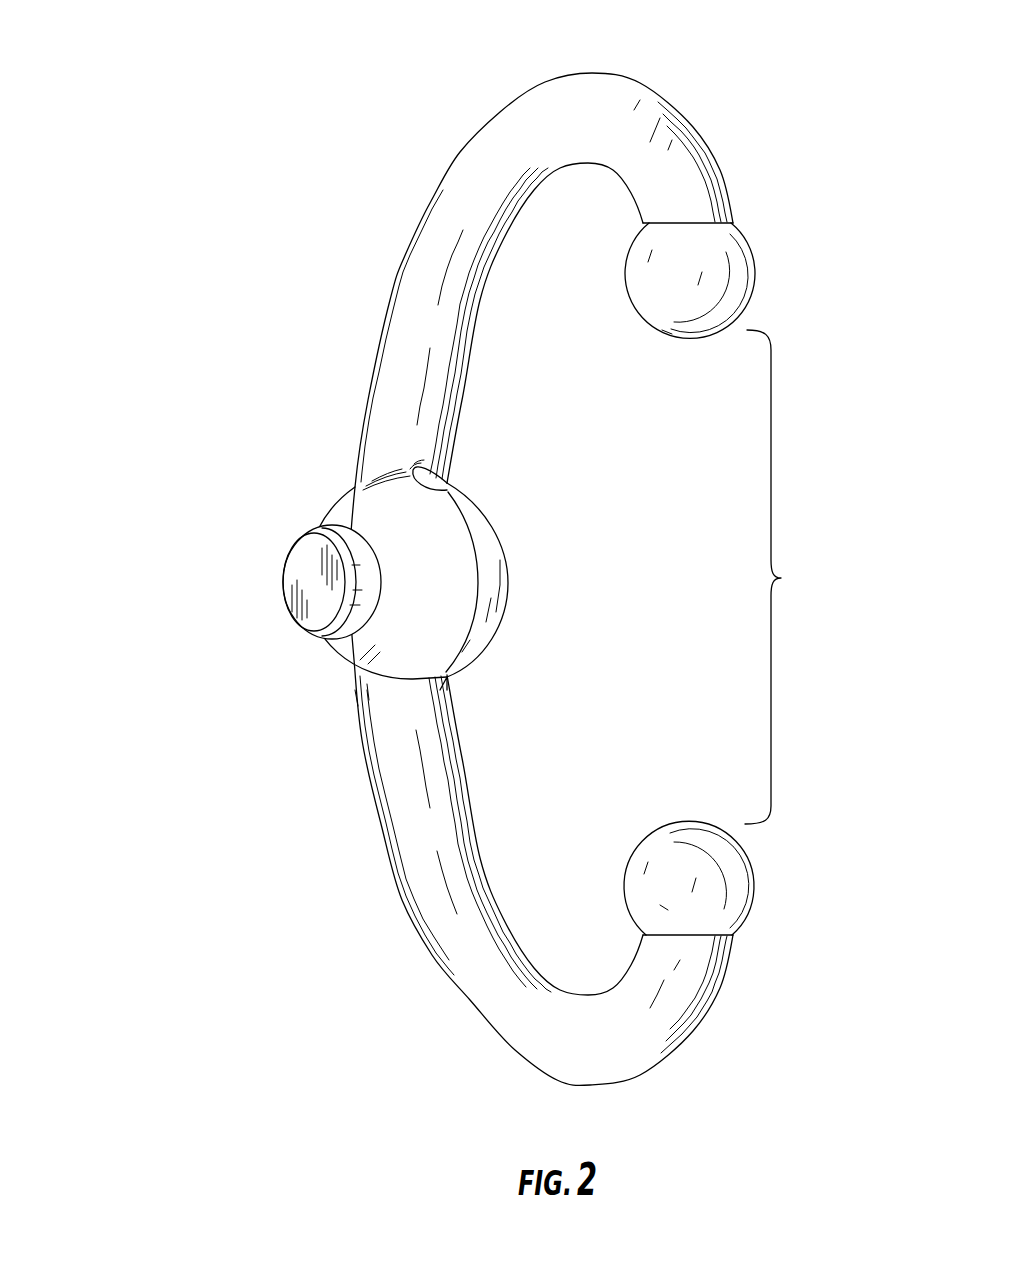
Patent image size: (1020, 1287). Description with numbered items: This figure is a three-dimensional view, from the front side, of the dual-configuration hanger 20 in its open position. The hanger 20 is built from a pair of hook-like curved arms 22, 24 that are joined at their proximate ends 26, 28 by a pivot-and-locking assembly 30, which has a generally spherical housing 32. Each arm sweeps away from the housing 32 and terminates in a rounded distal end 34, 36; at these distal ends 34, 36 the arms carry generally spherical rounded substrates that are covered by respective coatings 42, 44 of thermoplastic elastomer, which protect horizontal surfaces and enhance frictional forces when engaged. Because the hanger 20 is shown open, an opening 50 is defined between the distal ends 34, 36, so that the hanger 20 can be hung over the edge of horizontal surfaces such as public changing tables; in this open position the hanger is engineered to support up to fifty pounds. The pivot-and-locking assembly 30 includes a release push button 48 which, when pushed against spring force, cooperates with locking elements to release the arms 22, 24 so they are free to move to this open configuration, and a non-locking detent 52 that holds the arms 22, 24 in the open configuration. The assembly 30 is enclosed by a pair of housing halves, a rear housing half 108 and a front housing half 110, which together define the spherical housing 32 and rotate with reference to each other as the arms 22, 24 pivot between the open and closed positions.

The hanger 20 is at (228, 266).
The curved arm 22 is at (413, 872).
The curved arm 24 is at (397, 333).
The proximate end 26 is at (318, 711).
The proximate end 28 is at (302, 469).
The pivot-and-locking assembly 30 is at (544, 520).
The generally spherical housing 32 is at (452, 543).
The distal end 34 is at (758, 952).
The distal end 36 is at (758, 177).
The coating 42 is at (683, 857).
The coating 44 is at (673, 312).
The release push button 48 is at (298, 583).
The opening 50 is at (781, 577).
The non-locking detent 52 is at (487, 685).
The rear housing half 108 is at (497, 600).
The front housing half 110 is at (375, 645).